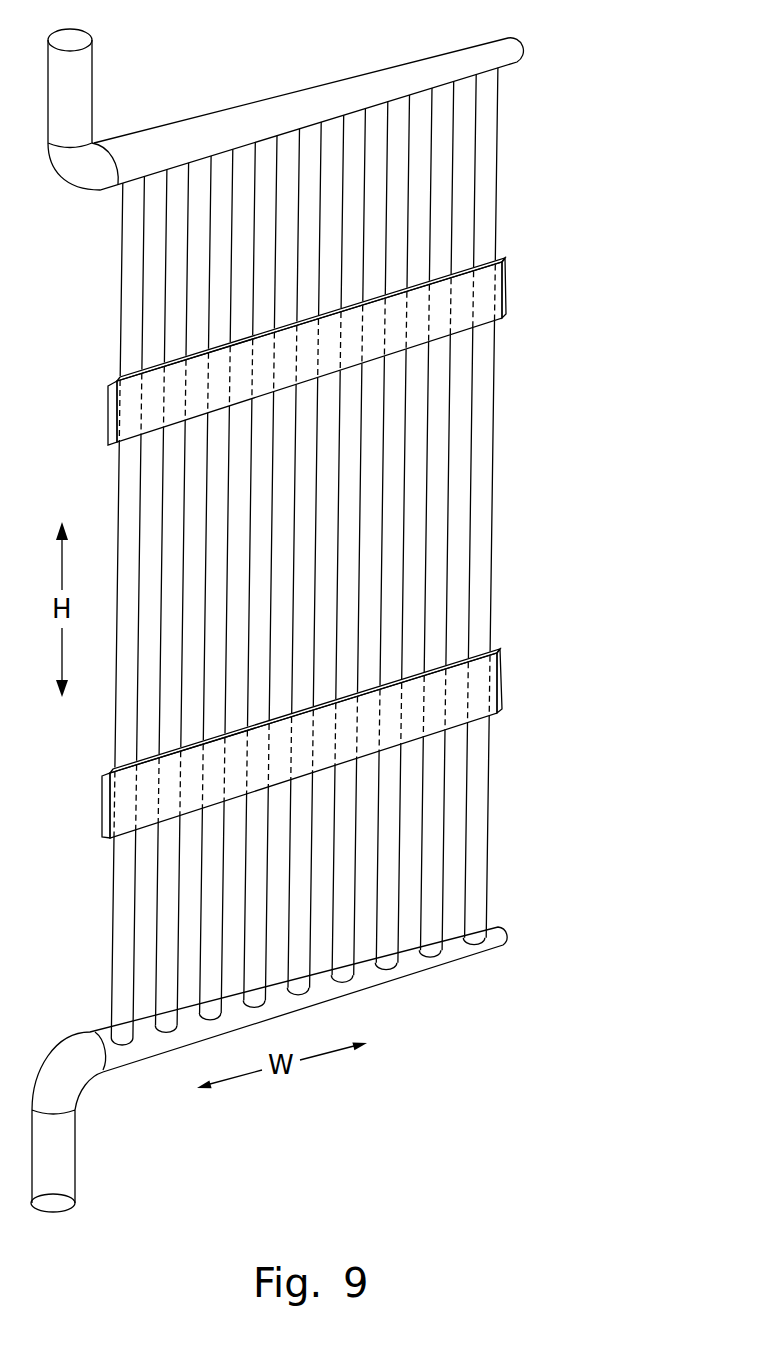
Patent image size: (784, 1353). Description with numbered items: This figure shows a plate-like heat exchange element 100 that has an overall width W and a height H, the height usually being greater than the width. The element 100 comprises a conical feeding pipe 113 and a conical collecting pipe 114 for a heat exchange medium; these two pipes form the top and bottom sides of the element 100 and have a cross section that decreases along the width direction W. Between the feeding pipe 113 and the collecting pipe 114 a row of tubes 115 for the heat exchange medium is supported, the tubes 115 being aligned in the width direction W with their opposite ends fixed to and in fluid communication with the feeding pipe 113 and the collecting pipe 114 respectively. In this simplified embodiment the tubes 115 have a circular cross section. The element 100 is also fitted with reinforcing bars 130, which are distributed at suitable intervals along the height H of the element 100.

The heat exchange element 100 is at (643, 429).
The conical feeding pipe 113 is at (417, 965).
The conical collecting pipe 114 is at (326, 100).
The tubes 115 is at (493, 542).
The reinforcing bars 130 is at (509, 284).